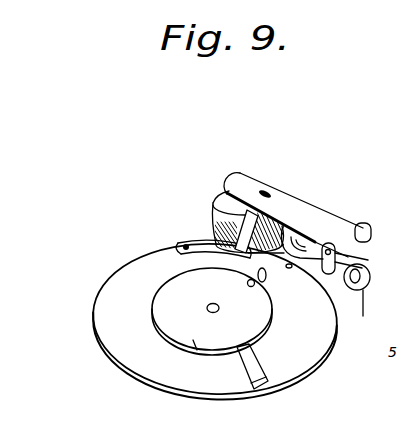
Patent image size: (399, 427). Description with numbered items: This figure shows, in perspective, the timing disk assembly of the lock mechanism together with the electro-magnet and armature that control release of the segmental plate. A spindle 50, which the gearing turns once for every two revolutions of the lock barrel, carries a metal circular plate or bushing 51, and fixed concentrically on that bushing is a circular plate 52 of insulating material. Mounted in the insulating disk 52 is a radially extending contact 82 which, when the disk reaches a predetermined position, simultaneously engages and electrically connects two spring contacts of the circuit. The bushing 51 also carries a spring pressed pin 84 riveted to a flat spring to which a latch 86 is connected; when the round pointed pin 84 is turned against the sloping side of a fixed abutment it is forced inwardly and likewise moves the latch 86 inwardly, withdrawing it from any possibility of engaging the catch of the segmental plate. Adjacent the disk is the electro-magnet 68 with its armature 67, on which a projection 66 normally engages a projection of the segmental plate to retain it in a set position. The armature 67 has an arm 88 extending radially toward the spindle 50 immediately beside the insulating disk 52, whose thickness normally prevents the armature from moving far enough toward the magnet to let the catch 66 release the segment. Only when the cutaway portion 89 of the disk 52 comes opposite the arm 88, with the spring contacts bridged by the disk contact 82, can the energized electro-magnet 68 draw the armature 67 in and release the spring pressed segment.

The spindle 50 is at (217, 304).
The circular plate or bushing 51 is at (196, 349).
The circular plate of insulating material 52 is at (215, 319).
The projection 66 is at (275, 188).
The armature 67 is at (258, 187).
The electro-magnet 68 is at (301, 227).
The radially extending contact 82 is at (256, 356).
The spring pressed pin 84 is at (250, 287).
The latch 86 is at (267, 281).
The arm 88 is at (214, 206).
The cutaway portion 89 is at (186, 252).